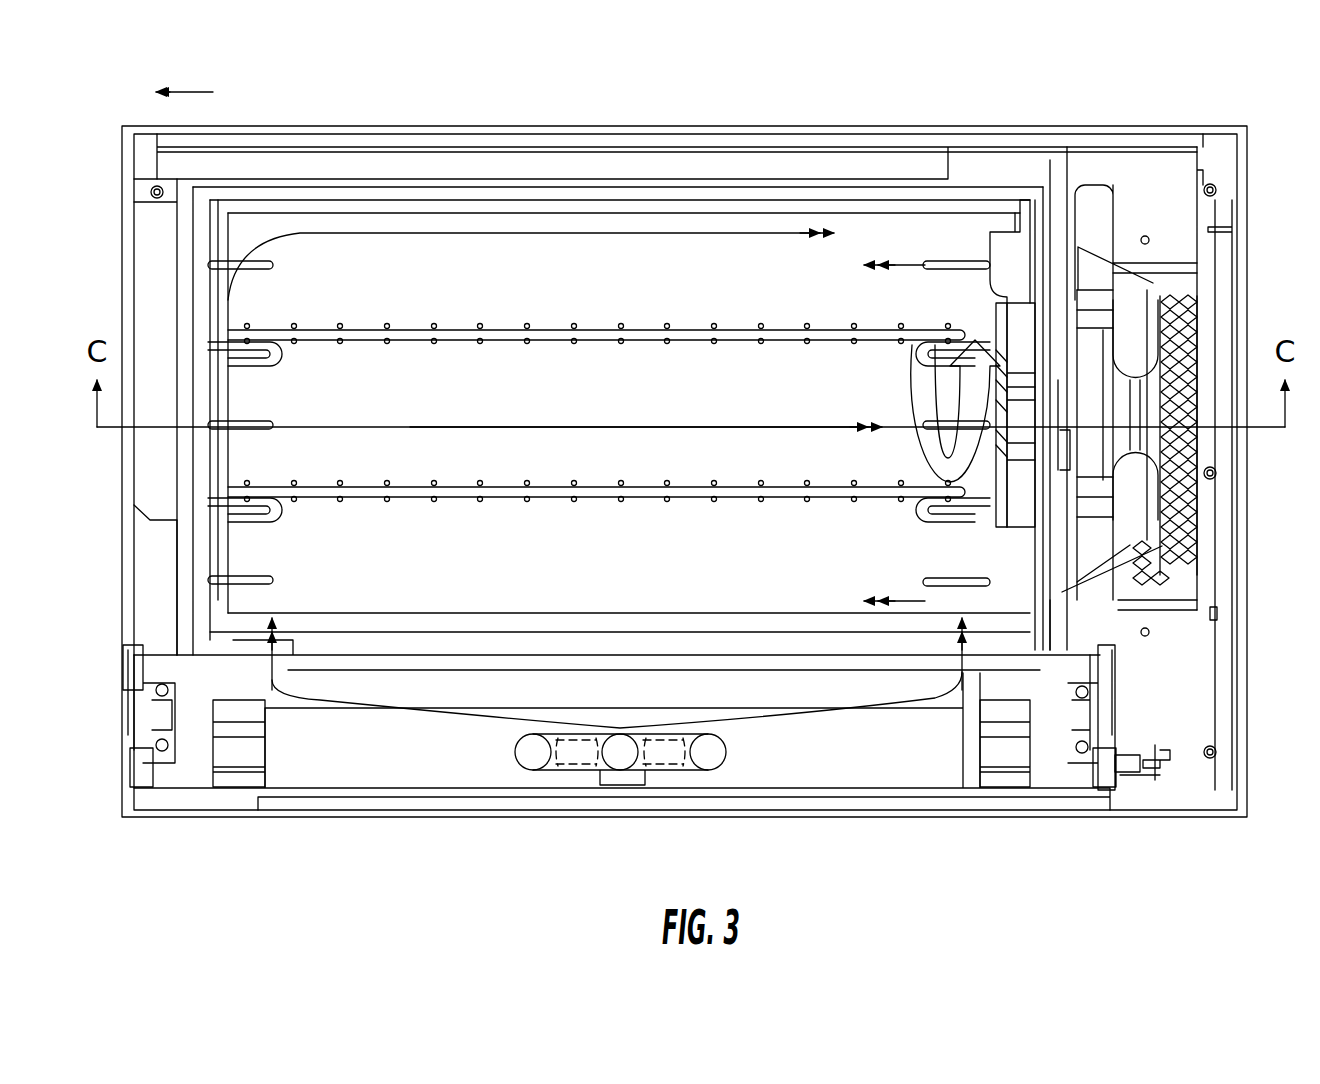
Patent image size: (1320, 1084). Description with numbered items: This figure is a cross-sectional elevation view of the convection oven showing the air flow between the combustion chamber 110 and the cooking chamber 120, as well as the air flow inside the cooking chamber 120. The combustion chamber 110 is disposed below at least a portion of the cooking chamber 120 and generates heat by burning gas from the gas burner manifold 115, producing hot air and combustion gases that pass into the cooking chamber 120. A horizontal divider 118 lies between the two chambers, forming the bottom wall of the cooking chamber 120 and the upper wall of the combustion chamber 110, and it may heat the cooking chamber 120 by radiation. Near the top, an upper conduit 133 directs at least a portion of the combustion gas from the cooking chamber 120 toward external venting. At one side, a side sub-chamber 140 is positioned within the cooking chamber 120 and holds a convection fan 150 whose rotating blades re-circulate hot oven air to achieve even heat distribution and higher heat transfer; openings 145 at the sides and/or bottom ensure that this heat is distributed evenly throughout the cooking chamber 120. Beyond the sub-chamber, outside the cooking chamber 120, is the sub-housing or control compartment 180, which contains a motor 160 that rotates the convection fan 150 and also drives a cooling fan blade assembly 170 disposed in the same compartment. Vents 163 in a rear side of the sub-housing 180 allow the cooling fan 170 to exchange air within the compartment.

The combustion chamber 110 is at (373, 762).
The gas burner manifold 115 is at (533, 762).
The horizontal divider 118 is at (450, 640).
The cooking chamber 120 is at (554, 294).
The upper conduit 133 is at (878, 170).
The side sub-chamber 140 is at (1013, 240).
The openings 145 is at (988, 260).
The convection fan 150 is at (1023, 330).
The motor 160 is at (1082, 612).
The vents 163 is at (1197, 558).
The cooling fan blade assembly 170 is at (1138, 305).
The sub-housing or control compartment 180 is at (1179, 700).